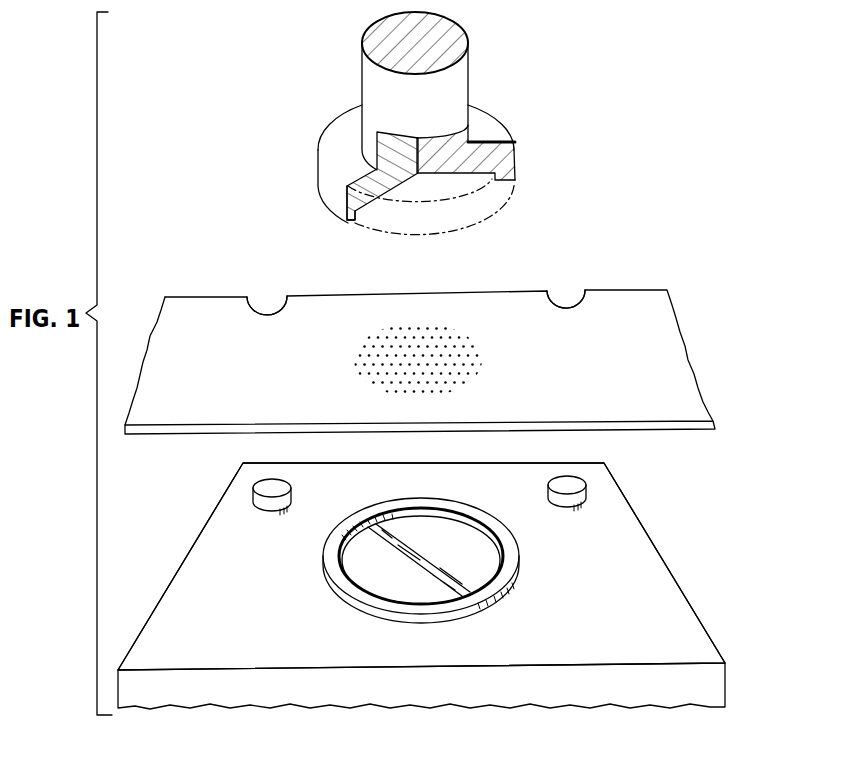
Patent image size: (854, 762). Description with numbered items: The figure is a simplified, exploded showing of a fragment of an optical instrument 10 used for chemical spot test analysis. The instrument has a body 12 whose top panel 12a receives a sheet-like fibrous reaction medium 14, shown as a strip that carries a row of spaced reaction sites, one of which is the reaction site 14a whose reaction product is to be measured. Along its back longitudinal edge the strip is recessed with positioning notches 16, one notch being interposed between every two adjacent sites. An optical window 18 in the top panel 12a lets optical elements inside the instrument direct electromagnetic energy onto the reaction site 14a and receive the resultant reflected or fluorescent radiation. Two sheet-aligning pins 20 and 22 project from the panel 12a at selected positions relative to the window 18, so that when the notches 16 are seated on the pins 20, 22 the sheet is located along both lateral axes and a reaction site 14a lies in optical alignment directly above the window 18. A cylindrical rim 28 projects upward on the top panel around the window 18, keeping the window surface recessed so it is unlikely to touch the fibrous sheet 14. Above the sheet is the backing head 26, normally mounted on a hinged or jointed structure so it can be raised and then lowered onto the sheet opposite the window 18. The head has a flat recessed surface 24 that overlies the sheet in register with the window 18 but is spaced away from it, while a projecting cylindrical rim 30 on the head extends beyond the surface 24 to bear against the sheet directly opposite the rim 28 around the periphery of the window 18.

The optical instrument 10 is at (652, 525).
The body 12 is at (717, 688).
The top panel 12a is at (667, 598).
The sheet-like fibrous reaction medium 14 is at (678, 347).
The reaction site 14a is at (477, 343).
The positioning notches 16 is at (267, 298).
The optical window 18 is at (483, 560).
The sheet-aligning pin 20 is at (265, 490).
The sheet-aligning pin 22 is at (570, 487).
The recessed surface 24 is at (463, 176).
The backing head 26 is at (500, 110).
The cylindrical rim 28 is at (398, 503).
The projecting cylindrical rim 30 is at (352, 222).